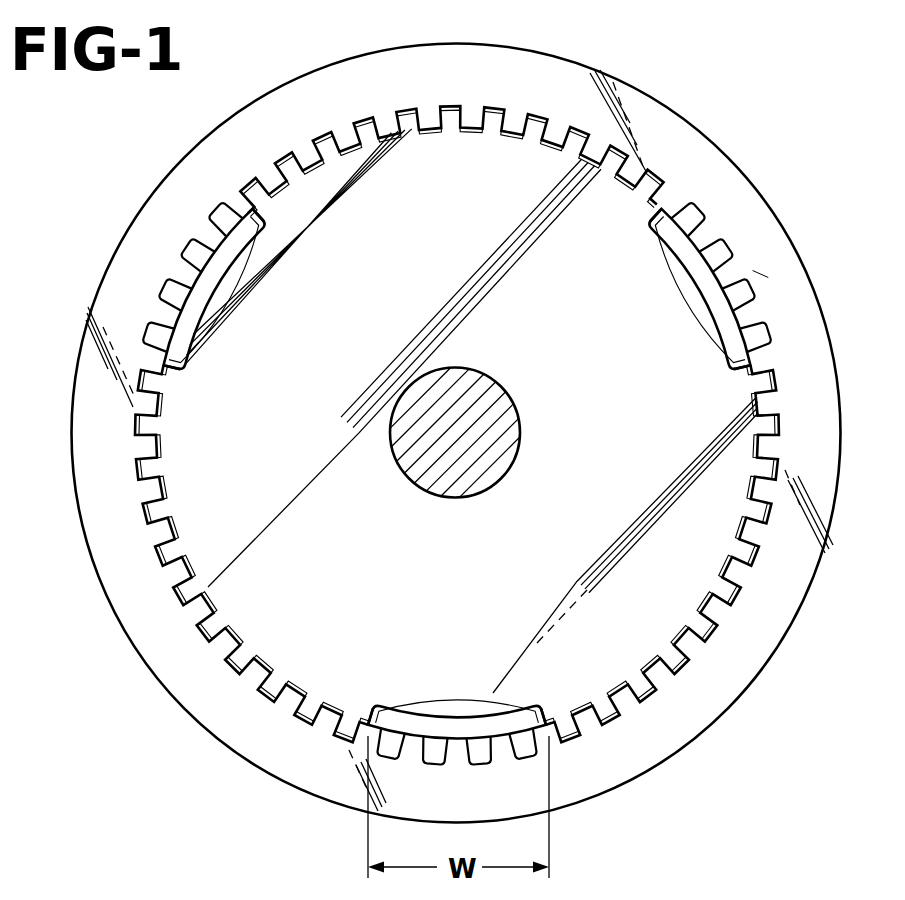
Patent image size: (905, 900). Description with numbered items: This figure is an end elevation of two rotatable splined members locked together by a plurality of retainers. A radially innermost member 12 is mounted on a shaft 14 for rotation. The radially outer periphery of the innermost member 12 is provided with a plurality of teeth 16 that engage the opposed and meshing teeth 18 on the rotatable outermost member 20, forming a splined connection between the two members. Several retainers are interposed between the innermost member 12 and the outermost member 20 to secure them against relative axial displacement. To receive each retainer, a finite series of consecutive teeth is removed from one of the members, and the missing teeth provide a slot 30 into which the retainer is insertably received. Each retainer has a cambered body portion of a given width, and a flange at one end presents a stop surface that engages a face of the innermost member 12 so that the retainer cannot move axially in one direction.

The radially innermost member 12 is at (362, 575).
The shaft 14 is at (478, 465).
The teeth 16 is at (400, 108).
The meshing teeth 18 is at (388, 122).
The rotatable outermost member 20 is at (750, 680).
The slot 30 is at (760, 280).